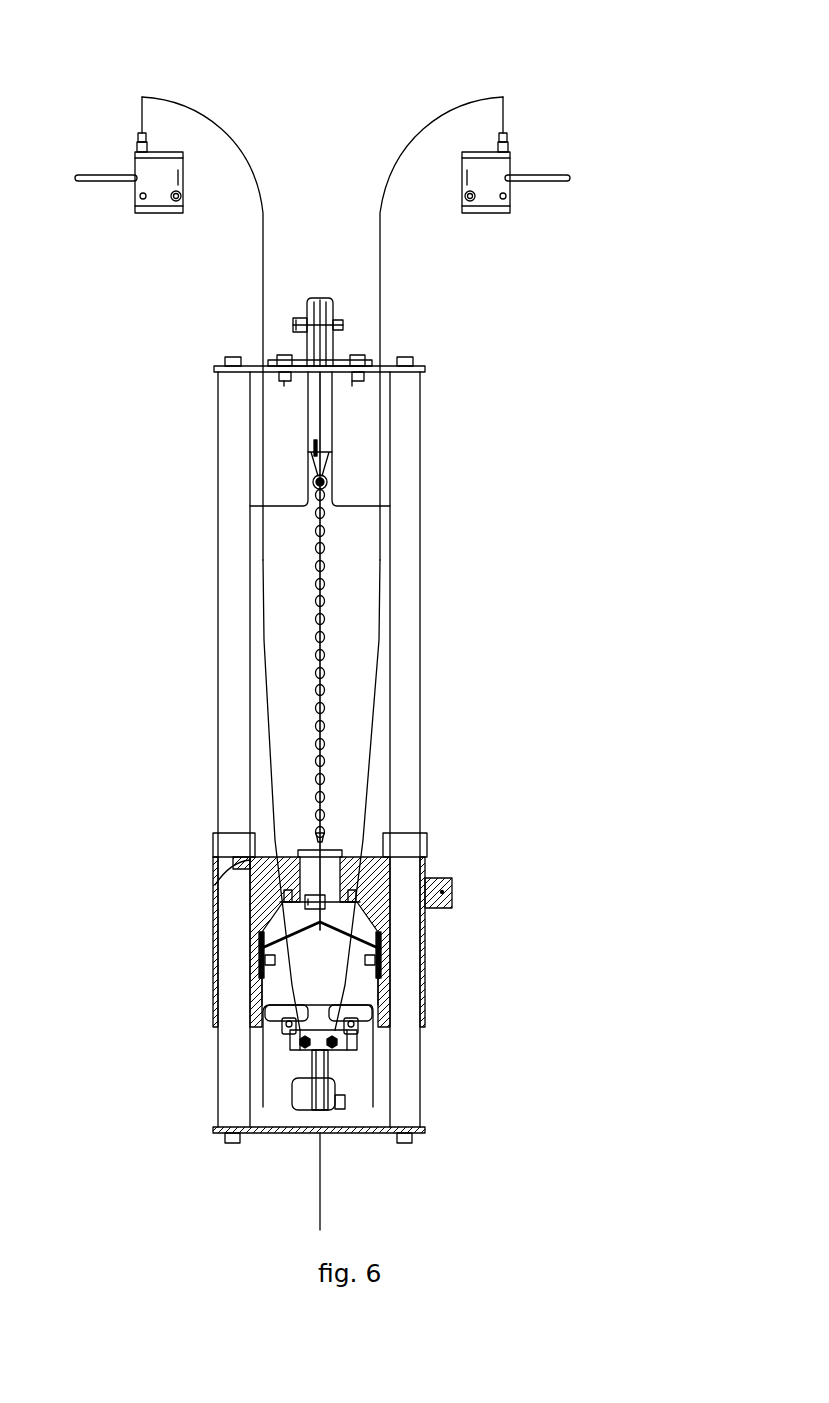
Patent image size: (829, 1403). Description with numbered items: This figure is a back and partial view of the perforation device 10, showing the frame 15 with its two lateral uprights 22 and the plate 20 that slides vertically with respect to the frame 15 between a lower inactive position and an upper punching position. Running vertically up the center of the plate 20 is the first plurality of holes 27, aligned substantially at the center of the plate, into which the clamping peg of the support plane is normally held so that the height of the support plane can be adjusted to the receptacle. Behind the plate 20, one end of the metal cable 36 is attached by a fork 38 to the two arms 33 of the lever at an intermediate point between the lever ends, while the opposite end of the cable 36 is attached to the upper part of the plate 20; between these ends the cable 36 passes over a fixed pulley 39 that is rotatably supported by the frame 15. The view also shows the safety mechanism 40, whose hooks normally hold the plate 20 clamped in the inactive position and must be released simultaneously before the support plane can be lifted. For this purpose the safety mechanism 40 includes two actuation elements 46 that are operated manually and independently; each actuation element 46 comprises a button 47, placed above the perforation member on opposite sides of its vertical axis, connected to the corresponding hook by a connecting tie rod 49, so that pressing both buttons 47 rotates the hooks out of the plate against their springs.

The perforation device 10 is at (624, 87).
The frame 15 is at (390, 366).
The plate 20 is at (352, 596).
The uprights 22 is at (233, 596).
The holes 27 is at (322, 537).
The arms 33 is at (268, 955).
The cable 36 is at (323, 719).
The fork 38 is at (387, 928).
The pulley 39 is at (300, 325).
The safety mechanism 40 is at (290, 1059).
The actuation elements 46 is at (90, 154).
The button 47 is at (84, 182).
The connecting tie rod 49 is at (263, 720).